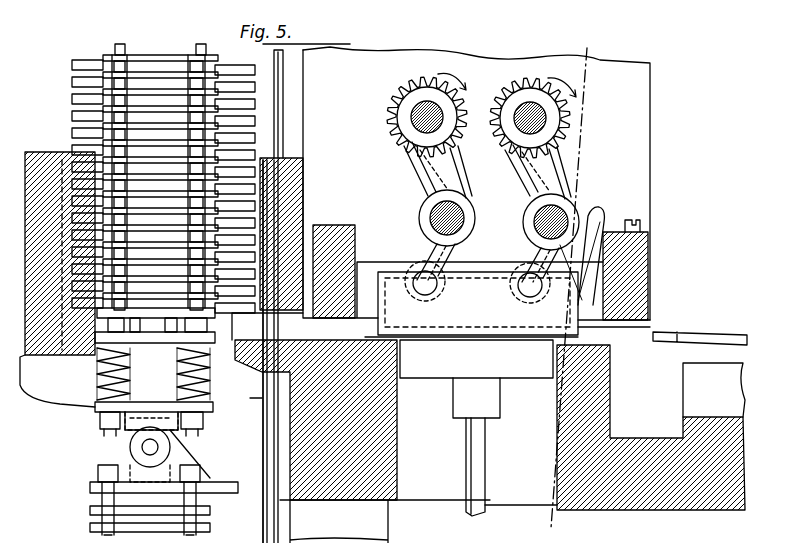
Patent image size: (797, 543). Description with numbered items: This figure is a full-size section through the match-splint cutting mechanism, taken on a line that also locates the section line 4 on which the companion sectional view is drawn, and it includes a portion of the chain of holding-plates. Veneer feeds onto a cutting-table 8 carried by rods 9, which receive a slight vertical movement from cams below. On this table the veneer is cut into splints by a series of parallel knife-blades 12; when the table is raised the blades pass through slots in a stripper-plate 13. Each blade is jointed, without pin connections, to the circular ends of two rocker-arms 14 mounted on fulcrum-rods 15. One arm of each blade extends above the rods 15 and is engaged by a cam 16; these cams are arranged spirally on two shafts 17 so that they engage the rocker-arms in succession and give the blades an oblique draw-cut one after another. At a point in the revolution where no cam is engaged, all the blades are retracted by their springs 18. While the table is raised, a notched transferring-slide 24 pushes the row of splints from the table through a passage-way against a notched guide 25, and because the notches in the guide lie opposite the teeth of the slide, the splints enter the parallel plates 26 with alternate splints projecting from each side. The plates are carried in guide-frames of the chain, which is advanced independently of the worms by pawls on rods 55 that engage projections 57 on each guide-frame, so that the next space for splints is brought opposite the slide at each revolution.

The section line x4 x4 4 is at (580, 36).
The cutting-table 8 is at (523, 346).
The rods 9 is at (487, 479).
The knife-blades 12 is at (378, 258).
The stripper-plate 13 is at (595, 328).
The rocker-arms 14 is at (450, 250).
The rods 15 is at (466, 213).
The cam 16 is at (447, 150).
The shafts 17 is at (520, 111).
The springs 18 is at (592, 213).
The transferring-slide 24 is at (698, 333).
The notched guide 25 is at (48, 157).
The parallel plates 26 is at (154, 56).
The rods 55 is at (248, 351).
The projections 57 is at (252, 494).